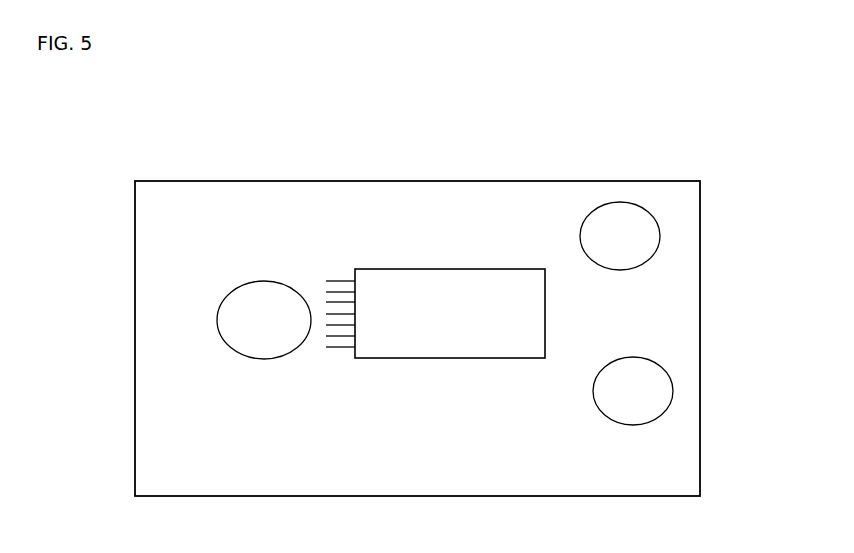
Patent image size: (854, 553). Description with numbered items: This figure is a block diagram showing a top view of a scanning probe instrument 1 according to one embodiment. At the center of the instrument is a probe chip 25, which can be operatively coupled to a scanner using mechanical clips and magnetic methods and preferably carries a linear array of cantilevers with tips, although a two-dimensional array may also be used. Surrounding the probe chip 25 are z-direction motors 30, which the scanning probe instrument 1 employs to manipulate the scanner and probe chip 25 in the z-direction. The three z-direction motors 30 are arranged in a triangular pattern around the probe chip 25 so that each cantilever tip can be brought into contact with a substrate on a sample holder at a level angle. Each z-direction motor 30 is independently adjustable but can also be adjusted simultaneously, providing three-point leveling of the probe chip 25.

The scanning probe instrument 1 is at (186, 178).
The probe chip 25 is at (435, 313).
The z-direction motor 30 is at (218, 333).